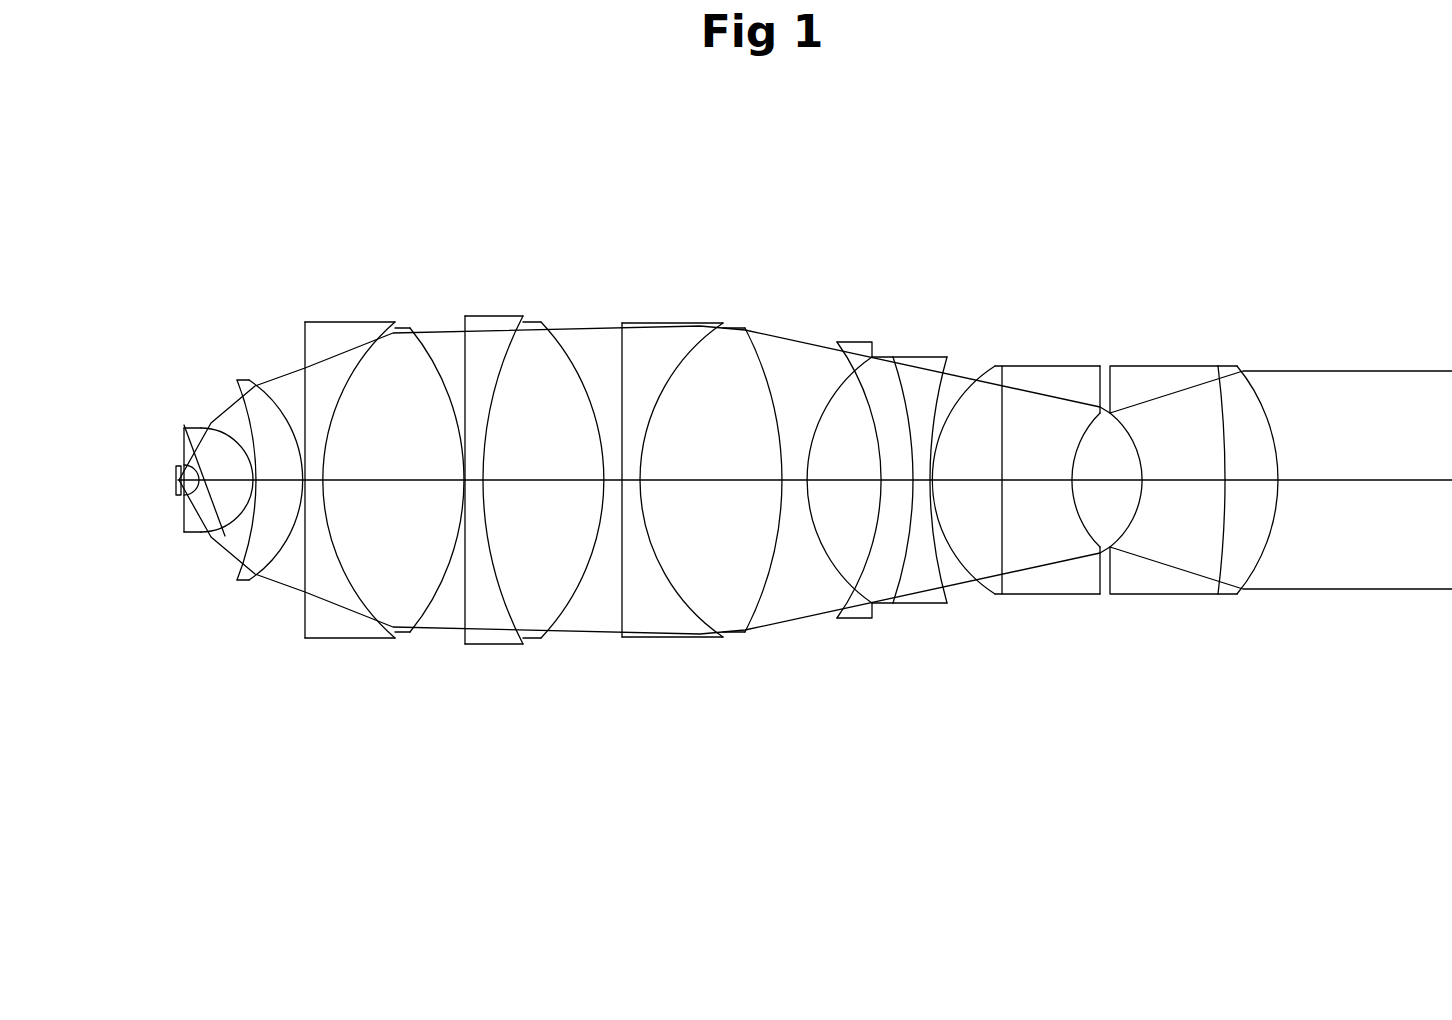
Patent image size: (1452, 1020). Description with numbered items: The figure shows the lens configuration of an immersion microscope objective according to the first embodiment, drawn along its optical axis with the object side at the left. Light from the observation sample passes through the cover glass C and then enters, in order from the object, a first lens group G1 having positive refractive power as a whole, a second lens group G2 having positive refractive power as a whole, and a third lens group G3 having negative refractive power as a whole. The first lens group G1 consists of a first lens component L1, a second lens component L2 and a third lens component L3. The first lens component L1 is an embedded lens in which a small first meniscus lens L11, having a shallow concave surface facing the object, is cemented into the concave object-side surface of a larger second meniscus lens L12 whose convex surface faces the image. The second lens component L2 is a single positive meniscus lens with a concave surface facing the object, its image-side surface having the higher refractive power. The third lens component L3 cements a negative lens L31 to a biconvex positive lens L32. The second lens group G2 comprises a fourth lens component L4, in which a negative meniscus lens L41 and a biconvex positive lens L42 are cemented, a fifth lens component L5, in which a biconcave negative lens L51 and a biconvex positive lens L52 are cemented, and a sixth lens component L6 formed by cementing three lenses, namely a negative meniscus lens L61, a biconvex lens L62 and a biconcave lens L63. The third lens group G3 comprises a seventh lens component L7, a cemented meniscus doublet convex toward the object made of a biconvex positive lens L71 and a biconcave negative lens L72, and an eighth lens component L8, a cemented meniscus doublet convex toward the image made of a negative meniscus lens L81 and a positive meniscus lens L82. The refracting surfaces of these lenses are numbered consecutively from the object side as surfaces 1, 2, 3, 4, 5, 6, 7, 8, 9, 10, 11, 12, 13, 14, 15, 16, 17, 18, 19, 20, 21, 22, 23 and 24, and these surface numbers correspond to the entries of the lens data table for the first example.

The cover glass C is at (177, 471).
The first lens group G1 is at (123, 222).
The second lens group G2 is at (453, 222).
The third lens group G3 is at (1285, 222).
The first lens component L1 is at (243, 315).
The first meniscus lens L11 is at (185, 427).
The second meniscus lens L12 is at (202, 427).
The second lens component L2 is at (240, 381).
The third lens component L3 is at (430, 265).
The negative lens L31 is at (323, 322).
The positive lens L32 is at (397, 327).
The fourth lens component L4 is at (575, 265).
The negative lens L41 is at (467, 316).
The positive lens L42 is at (527, 316).
The fifth lens component L5 is at (775, 265).
The negative lens L51 is at (670, 323).
The positive lens L52 is at (733, 328).
The sixth lens component L6 is at (970, 265).
The negative meniscus lens L61 is at (855, 342).
The biconvex lens L62 is at (880, 357).
The biconcave lens L63 is at (923, 357).
The seventh lens component L7 is at (1112, 265).
The positive lens L71 is at (993, 366).
The negative lens L72 is at (1060, 366).
The eighth lens component L8 is at (1278, 265).
The negative lens L81 is at (1158, 366).
The positive meniscus lens L82 is at (1225, 366).
The lens surface 1 is at (182, 520).
The lens surface 2 is at (188, 532).
The lens surface 3 is at (227, 533).
The lens surface 4 is at (235, 562).
The lens surface 5 is at (276, 562).
The lens surface 6 is at (306, 612).
The lens surface 7 is at (358, 600).
The lens surface 8 is at (438, 603).
The lens surface 9 is at (465, 612).
The lens surface 10 is at (505, 597).
The lens surface 11 is at (578, 600).
The lens surface 12 is at (622, 612).
The lens surface 13 is at (680, 595).
The lens surface 14 is at (760, 603).
The lens surface 15 is at (820, 597).
The lens surface 16 is at (843, 580).
The lens surface 17 is at (905, 570).
The lens surface 18 is at (947, 563).
The lens surface 19 is at (970, 580).
The lens surface 20 is at (1003, 547).
The lens surface 21 is at (1082, 528).
The lens surface 22 is at (1130, 527).
The lens surface 23 is at (1218, 525).
The lens surface 24 is at (1273, 527).